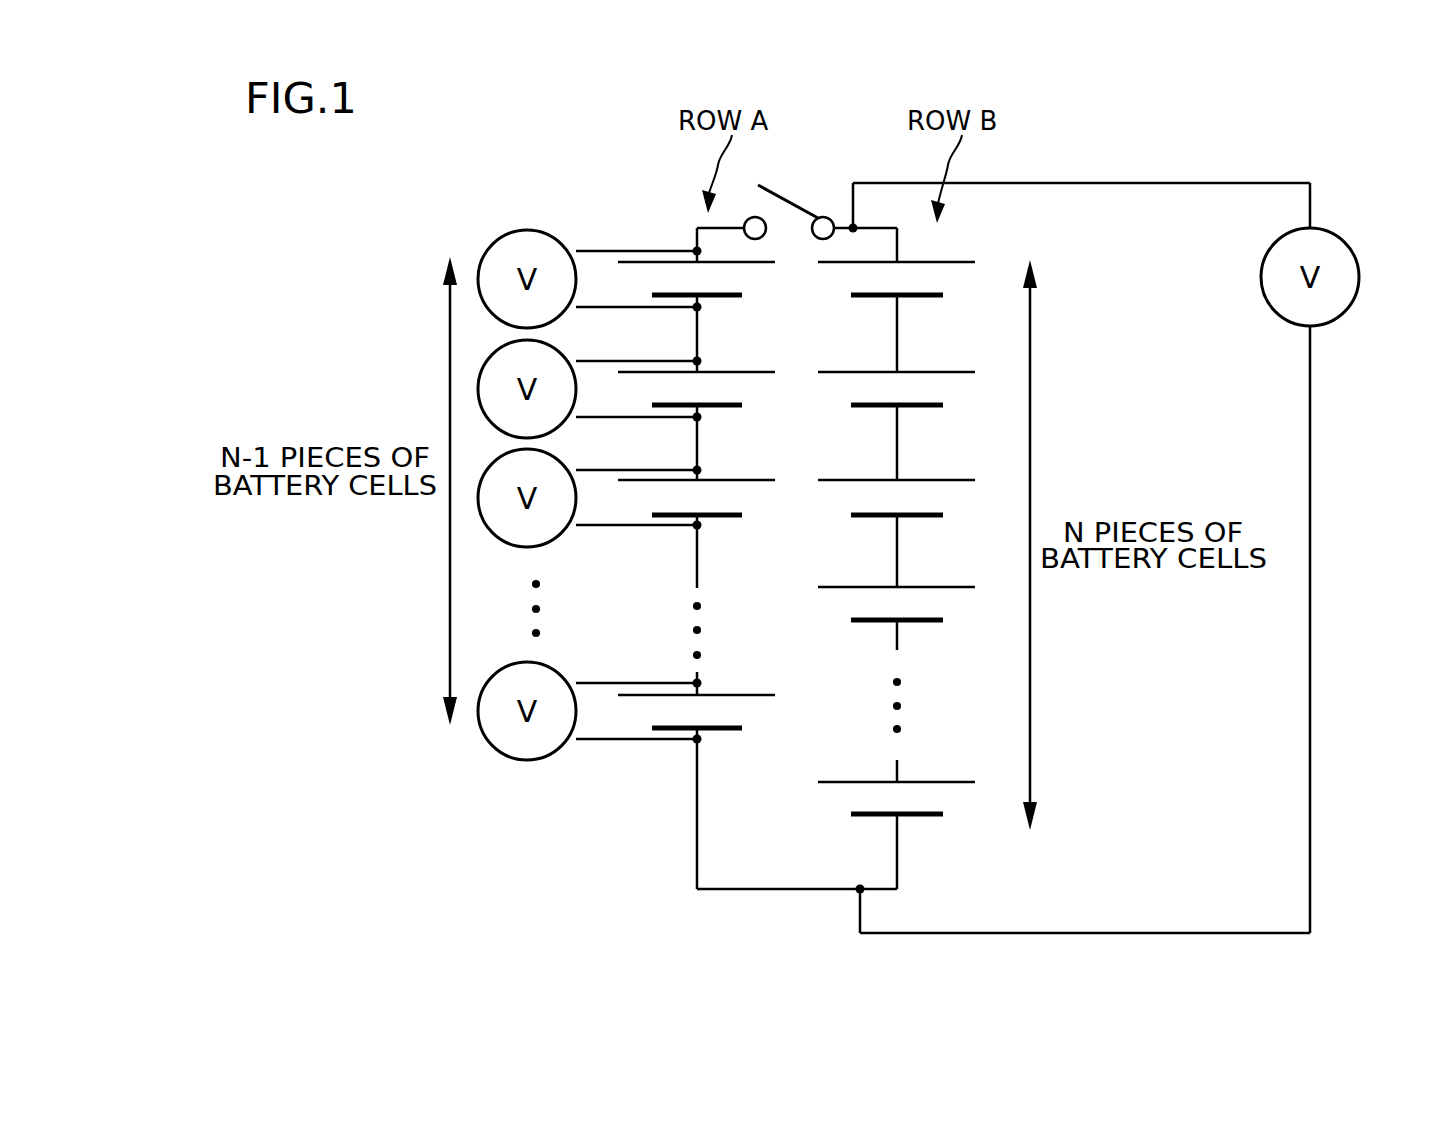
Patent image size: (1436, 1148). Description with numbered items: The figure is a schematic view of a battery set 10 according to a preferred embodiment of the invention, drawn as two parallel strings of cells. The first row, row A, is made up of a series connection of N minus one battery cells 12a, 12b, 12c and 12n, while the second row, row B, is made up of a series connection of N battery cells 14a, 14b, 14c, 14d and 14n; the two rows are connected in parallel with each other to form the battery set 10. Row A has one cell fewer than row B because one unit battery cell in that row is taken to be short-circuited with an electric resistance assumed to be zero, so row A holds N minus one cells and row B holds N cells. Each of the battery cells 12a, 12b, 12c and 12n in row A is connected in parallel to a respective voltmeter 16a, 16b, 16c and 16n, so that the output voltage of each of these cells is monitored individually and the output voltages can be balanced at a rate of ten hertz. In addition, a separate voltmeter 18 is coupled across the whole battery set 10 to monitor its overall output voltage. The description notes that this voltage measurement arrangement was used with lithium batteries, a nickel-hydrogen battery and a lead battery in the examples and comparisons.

The battery set 10 is at (1042, 169).
The battery cell 12a is at (743, 278).
The battery cell 12b is at (750, 390).
The battery cell 12c is at (743, 502).
The battery cell 12n is at (745, 712).
The battery cell 14a is at (955, 277).
The battery cell 14b is at (955, 390).
The battery cell 14c is at (955, 497).
The battery cell 14d is at (950, 605).
The battery cell 14n is at (960, 805).
The voltmeter 16a is at (552, 233).
The voltmeter 16b is at (553, 346).
The voltmeter 16c is at (553, 455).
The voltmeter 16n is at (550, 667).
The voltmeter 18 is at (1329, 230).